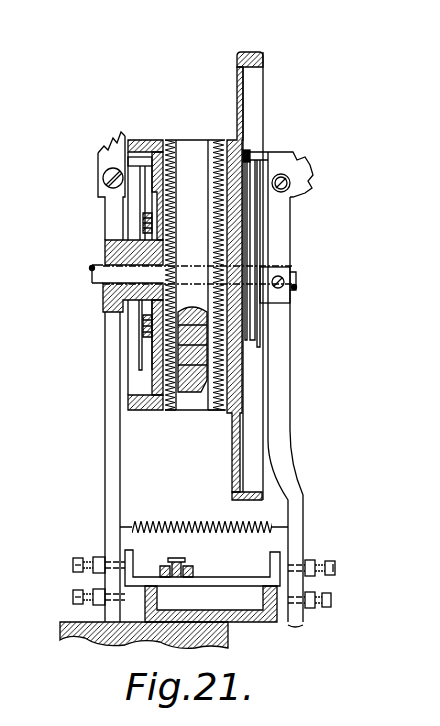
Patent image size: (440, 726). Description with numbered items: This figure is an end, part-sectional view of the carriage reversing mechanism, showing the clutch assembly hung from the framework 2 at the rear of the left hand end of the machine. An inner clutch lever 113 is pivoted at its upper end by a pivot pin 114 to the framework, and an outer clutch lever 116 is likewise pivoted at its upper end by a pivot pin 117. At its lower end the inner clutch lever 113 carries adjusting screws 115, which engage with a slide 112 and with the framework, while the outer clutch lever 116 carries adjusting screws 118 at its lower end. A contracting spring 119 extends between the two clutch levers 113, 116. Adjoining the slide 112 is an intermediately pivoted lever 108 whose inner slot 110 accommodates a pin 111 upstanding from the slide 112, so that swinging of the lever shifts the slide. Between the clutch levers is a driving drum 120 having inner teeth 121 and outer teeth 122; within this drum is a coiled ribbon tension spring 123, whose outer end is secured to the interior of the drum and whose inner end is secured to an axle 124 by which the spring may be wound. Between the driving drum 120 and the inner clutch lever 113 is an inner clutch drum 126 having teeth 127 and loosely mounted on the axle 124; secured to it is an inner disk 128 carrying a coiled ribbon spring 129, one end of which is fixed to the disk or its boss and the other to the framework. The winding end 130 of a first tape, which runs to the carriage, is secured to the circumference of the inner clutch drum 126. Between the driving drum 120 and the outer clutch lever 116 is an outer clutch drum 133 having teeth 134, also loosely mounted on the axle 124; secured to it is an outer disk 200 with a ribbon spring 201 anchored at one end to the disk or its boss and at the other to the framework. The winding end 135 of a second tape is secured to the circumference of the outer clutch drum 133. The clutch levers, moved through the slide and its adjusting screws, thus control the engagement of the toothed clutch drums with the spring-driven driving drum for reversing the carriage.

The broken-away frame portion 2 is at (112, 150).
The intermediately pivoted lever 108 is at (197, 578).
The inner slot 110 is at (167, 566).
The pin 111 is at (179, 562).
The slide 112 is at (222, 586).
The inner clutch lever 113 is at (282, 353).
The pivot pin 114 is at (290, 190).
The adjusting screws 115 is at (330, 592).
The outer clutch lever 116 is at (110, 450).
The pivot pin 117 is at (103, 177).
The adjusting screws 118 is at (73, 597).
The contracting spring 119 is at (193, 525).
The driving drum 120 is at (195, 275).
The inner teeth 121 is at (210, 141).
The outer teeth 122 is at (168, 410).
The coiled ribbon tension spring 123 is at (198, 390).
The axle 124 is at (90, 272).
The inner clutch drum 126 is at (237, 89).
The teeth 127 is at (215, 403).
The inner disk 128 is at (253, 330).
The coiled ribbon spring 129 is at (248, 183).
The winding end of first tape 130 is at (265, 60).
The outer clutch drum 133 is at (130, 402).
The teeth 134 is at (160, 140).
The winding end of second tape 135 is at (138, 139).
The outer disk 200 is at (150, 213).
The ribbon spring 201 is at (150, 180).